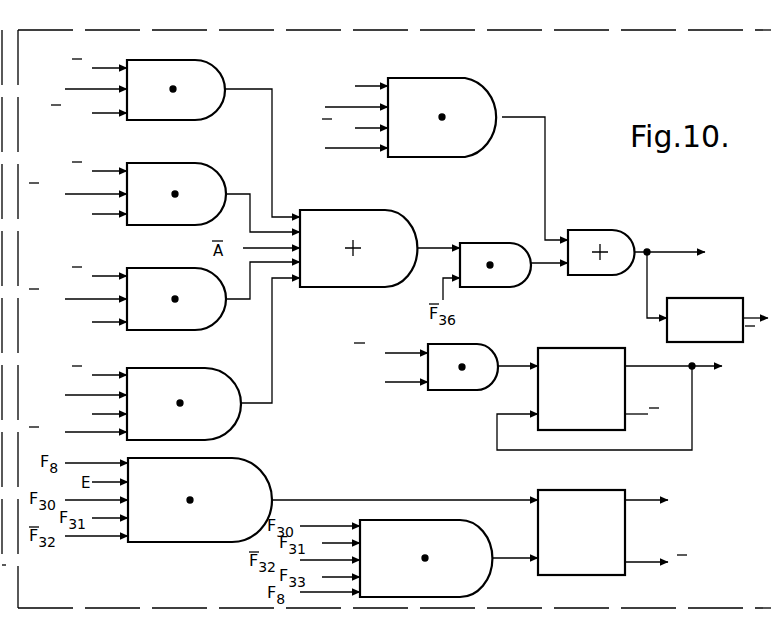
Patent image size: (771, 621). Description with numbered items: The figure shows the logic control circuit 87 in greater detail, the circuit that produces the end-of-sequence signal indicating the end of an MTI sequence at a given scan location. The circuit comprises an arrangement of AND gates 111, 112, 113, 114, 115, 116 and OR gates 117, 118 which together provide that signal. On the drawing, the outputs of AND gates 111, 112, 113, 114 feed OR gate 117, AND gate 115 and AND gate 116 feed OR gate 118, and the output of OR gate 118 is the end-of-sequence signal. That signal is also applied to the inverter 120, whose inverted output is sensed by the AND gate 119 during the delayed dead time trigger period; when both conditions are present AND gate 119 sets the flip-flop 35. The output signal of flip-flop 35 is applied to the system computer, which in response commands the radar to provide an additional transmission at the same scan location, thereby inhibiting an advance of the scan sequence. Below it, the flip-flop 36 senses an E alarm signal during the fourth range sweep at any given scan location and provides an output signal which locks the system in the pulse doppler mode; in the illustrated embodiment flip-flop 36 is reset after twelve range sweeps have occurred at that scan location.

The logic control circuit 87 is at (386, 319).
The AND gate 111 is at (215, 76).
The AND gate 112 is at (214, 180).
The AND gate 113 is at (170, 282).
The AND gate 114 is at (173, 382).
The AND gate 115 is at (496, 98).
The AND gate 116 is at (491, 246).
The OR gate 117 is at (393, 226).
The OR gate 118 is at (604, 238).
The AND gate 119 is at (481, 358).
The inverter 120 is at (695, 304).
The flip-flop F/F- 35 is at (625, 399).
The flip-flop F/F- 36 is at (621, 534).